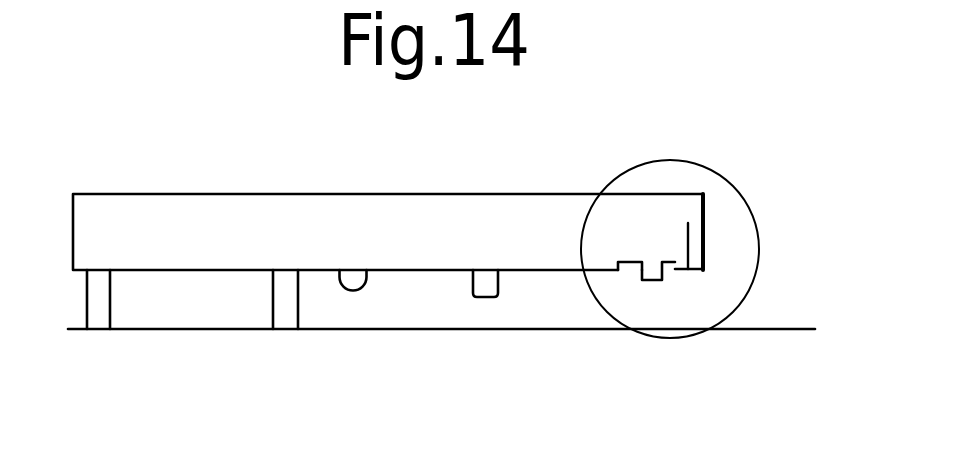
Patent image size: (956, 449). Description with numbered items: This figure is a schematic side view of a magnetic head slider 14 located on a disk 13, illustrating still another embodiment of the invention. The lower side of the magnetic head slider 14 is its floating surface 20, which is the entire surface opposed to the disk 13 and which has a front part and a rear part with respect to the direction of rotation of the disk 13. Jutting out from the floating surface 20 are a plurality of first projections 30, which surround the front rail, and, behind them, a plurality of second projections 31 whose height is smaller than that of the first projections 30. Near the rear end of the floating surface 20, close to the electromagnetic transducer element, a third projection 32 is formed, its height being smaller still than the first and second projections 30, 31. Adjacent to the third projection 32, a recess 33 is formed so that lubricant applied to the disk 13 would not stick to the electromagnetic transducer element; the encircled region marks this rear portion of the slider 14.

The magnetic head slider 14 is at (541, 210).
The floating surface 20 is at (367, 270).
The first projections 30 is at (99, 313).
The second projections 31 is at (485, 286).
The third projection 32 is at (653, 275).
The recess 33 is at (625, 270).
The disk 13 is at (775, 329).